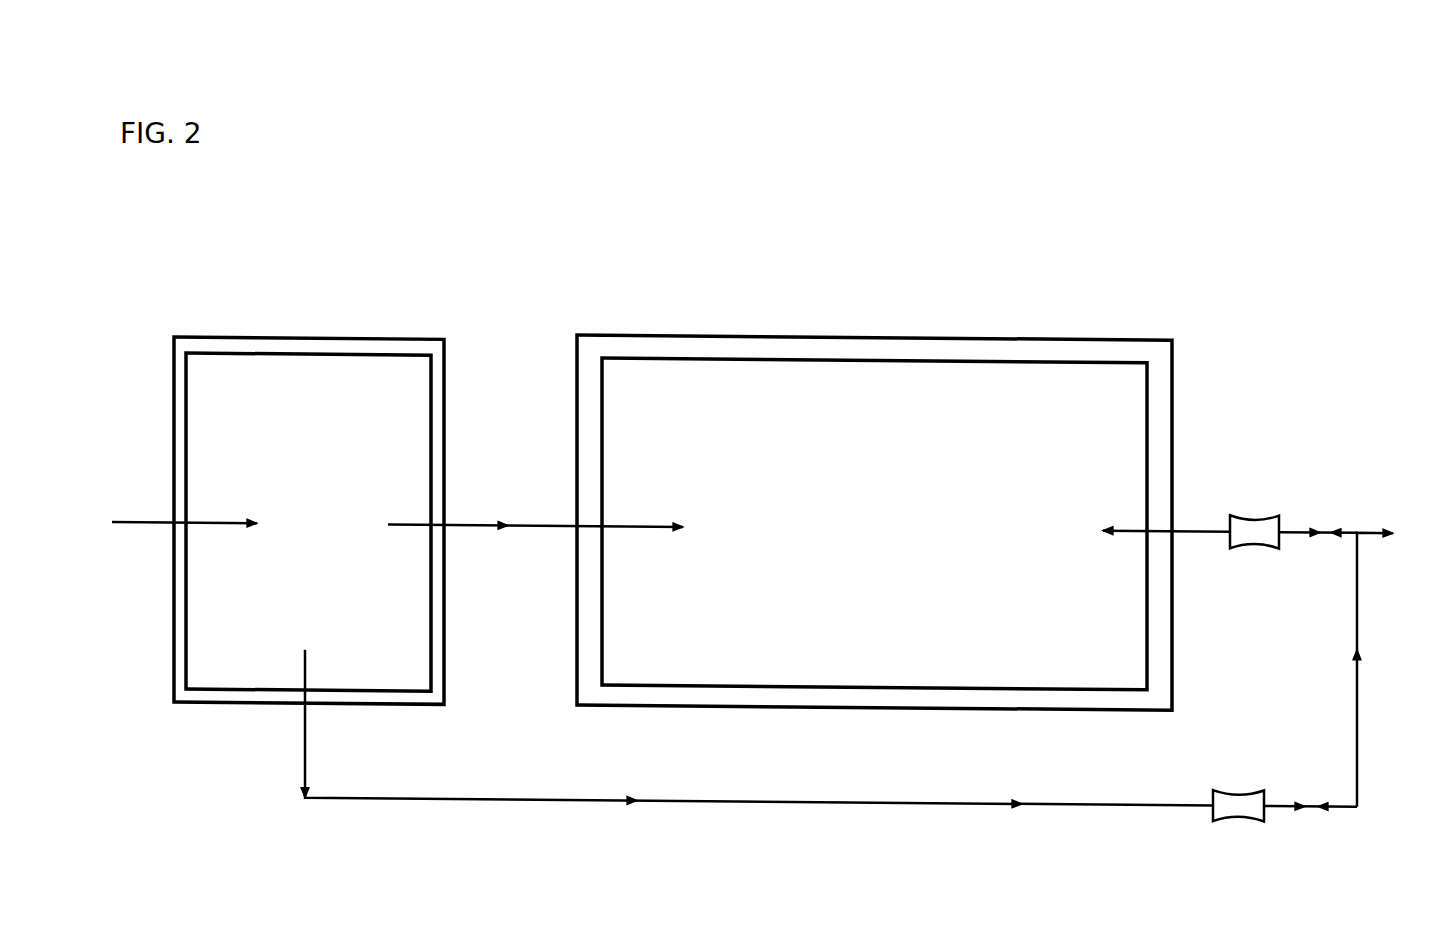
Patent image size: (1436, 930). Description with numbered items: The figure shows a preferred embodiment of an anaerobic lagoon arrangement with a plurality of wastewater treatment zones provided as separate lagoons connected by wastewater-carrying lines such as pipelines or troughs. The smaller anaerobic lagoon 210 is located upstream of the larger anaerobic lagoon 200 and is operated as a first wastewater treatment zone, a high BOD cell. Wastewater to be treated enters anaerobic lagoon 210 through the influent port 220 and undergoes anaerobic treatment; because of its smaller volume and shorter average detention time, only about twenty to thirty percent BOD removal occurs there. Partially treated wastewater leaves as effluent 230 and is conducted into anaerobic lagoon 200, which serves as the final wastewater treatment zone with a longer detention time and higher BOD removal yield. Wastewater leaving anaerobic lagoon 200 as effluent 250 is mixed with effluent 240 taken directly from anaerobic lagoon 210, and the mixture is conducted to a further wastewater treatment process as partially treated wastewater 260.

The anaerobic lagoon 200 is at (917, 323).
The anaerobic lagoon 210 is at (358, 331).
The influent port 220 is at (181, 504).
The effluent 230 is at (535, 509).
The effluent 240 is at (794, 736).
The effluent 250 is at (1206, 521).
The partially treated wastewater 260 is at (1380, 648).